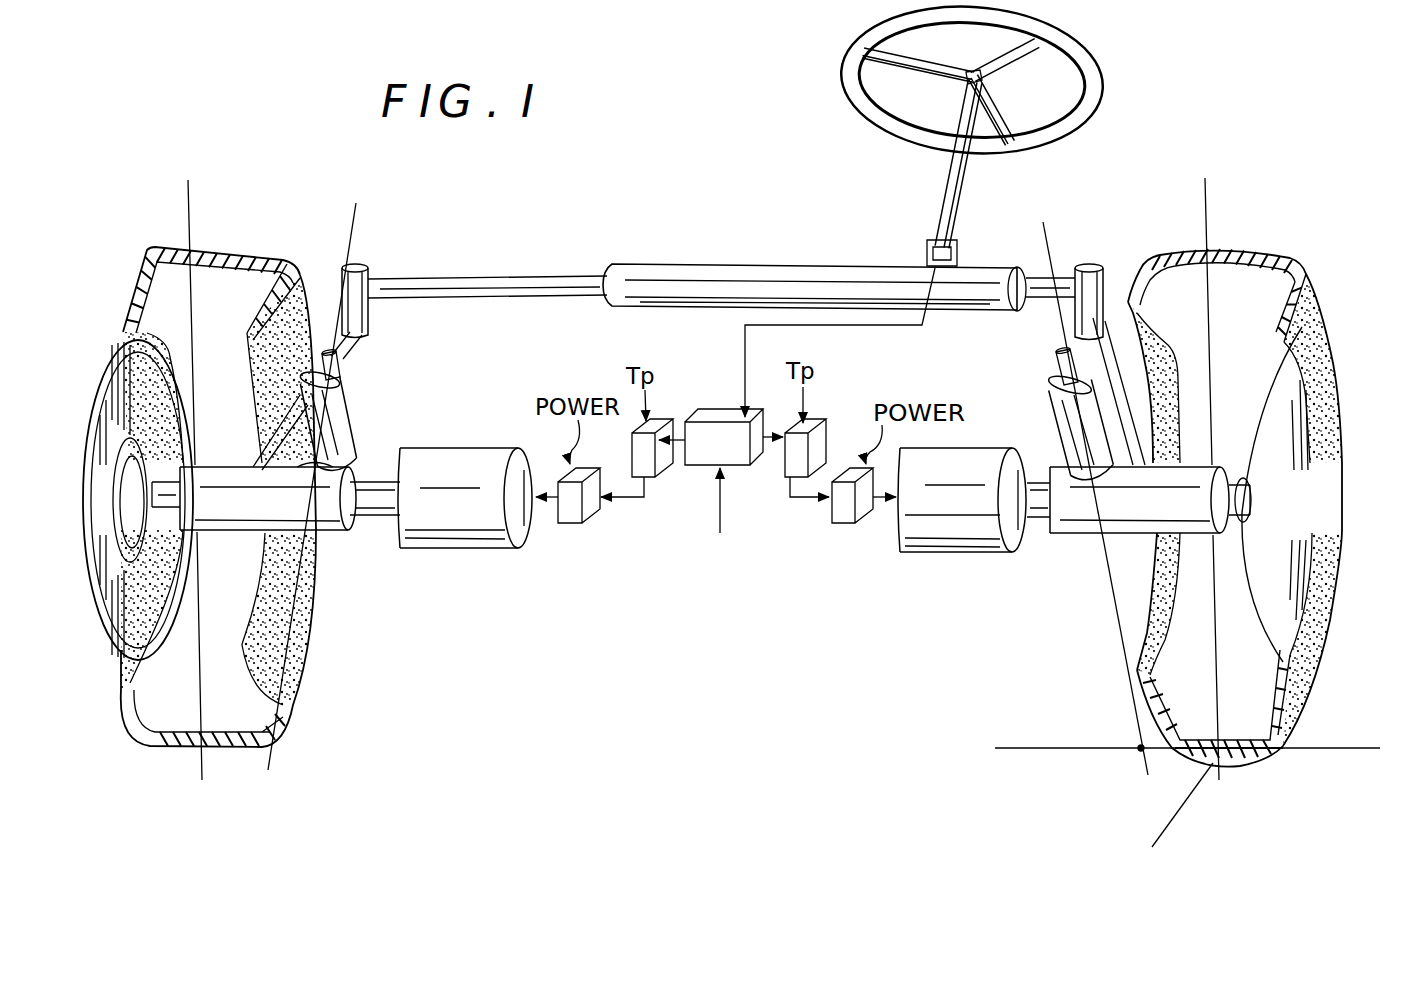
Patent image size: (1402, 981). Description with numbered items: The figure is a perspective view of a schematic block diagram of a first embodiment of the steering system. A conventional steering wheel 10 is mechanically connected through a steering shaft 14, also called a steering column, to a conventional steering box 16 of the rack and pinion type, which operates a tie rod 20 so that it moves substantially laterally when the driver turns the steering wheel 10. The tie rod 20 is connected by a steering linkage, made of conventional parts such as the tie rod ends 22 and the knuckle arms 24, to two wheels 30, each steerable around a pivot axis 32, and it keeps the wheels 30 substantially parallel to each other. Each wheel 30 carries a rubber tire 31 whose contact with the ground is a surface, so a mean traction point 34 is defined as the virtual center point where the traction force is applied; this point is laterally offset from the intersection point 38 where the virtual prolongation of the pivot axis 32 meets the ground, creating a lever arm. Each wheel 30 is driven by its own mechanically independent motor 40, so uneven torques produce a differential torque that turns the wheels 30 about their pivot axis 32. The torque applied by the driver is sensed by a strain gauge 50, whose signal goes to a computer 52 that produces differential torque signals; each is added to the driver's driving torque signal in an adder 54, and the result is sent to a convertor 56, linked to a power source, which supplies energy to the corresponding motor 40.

The steering wheel 10 is at (1104, 70).
The steering shaft 14 is at (958, 206).
The steering box 16 is at (710, 263).
The tie rod 20 is at (508, 278).
The tie rod ends 22 is at (370, 268).
The knuckle arms 24 is at (360, 400).
The wheels 30 is at (1270, 240).
The tires 31 is at (306, 650).
The pivot axis 32 is at (285, 745).
The mean traction point 34 is at (1240, 760).
The intersection point 38 is at (1138, 745).
The motor 40 is at (493, 549).
The strain gauge 50 is at (927, 250).
The computer 52 is at (703, 409).
The adder 54 is at (664, 478).
The convertor 56 is at (590, 523).